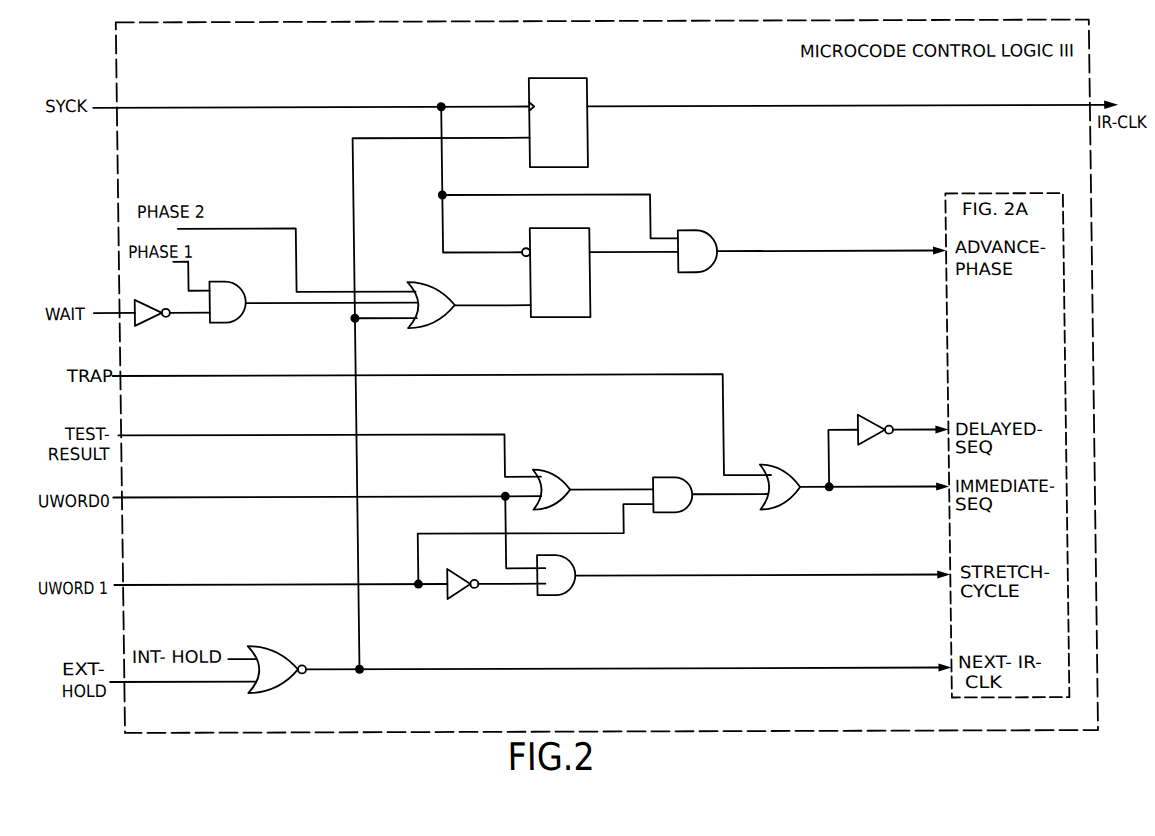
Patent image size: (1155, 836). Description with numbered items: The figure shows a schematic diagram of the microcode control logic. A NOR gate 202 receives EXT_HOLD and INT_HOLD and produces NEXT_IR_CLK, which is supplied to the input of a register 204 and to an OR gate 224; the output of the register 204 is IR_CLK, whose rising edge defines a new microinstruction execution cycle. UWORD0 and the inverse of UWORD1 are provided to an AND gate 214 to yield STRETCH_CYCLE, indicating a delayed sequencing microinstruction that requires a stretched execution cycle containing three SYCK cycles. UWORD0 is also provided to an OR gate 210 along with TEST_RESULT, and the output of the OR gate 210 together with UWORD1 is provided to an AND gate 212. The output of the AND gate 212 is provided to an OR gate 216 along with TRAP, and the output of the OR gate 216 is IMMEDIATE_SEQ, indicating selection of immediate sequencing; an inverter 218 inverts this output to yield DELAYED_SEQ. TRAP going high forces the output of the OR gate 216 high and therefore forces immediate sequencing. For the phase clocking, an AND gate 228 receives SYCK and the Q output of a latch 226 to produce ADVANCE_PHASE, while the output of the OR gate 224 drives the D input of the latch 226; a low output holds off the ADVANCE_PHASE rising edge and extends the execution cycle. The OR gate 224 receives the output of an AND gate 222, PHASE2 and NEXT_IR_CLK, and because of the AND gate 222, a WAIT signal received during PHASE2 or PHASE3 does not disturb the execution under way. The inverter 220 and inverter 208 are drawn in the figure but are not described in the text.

The NOR gate 202 is at (267, 644).
The register 204 is at (552, 78).
The inverter 208 is at (460, 569).
The OR gate 210 is at (541, 470).
The AND gate 212 is at (656, 478).
The AND gate 214 is at (562, 556).
The OR gate 216 is at (756, 465).
The inverter 218 is at (887, 416).
The inverter 220 is at (170, 286).
The AND gate 222 is at (234, 281).
The OR gate 224 is at (430, 290).
The latch 226 is at (547, 228).
The AND gate 228 is at (704, 231).